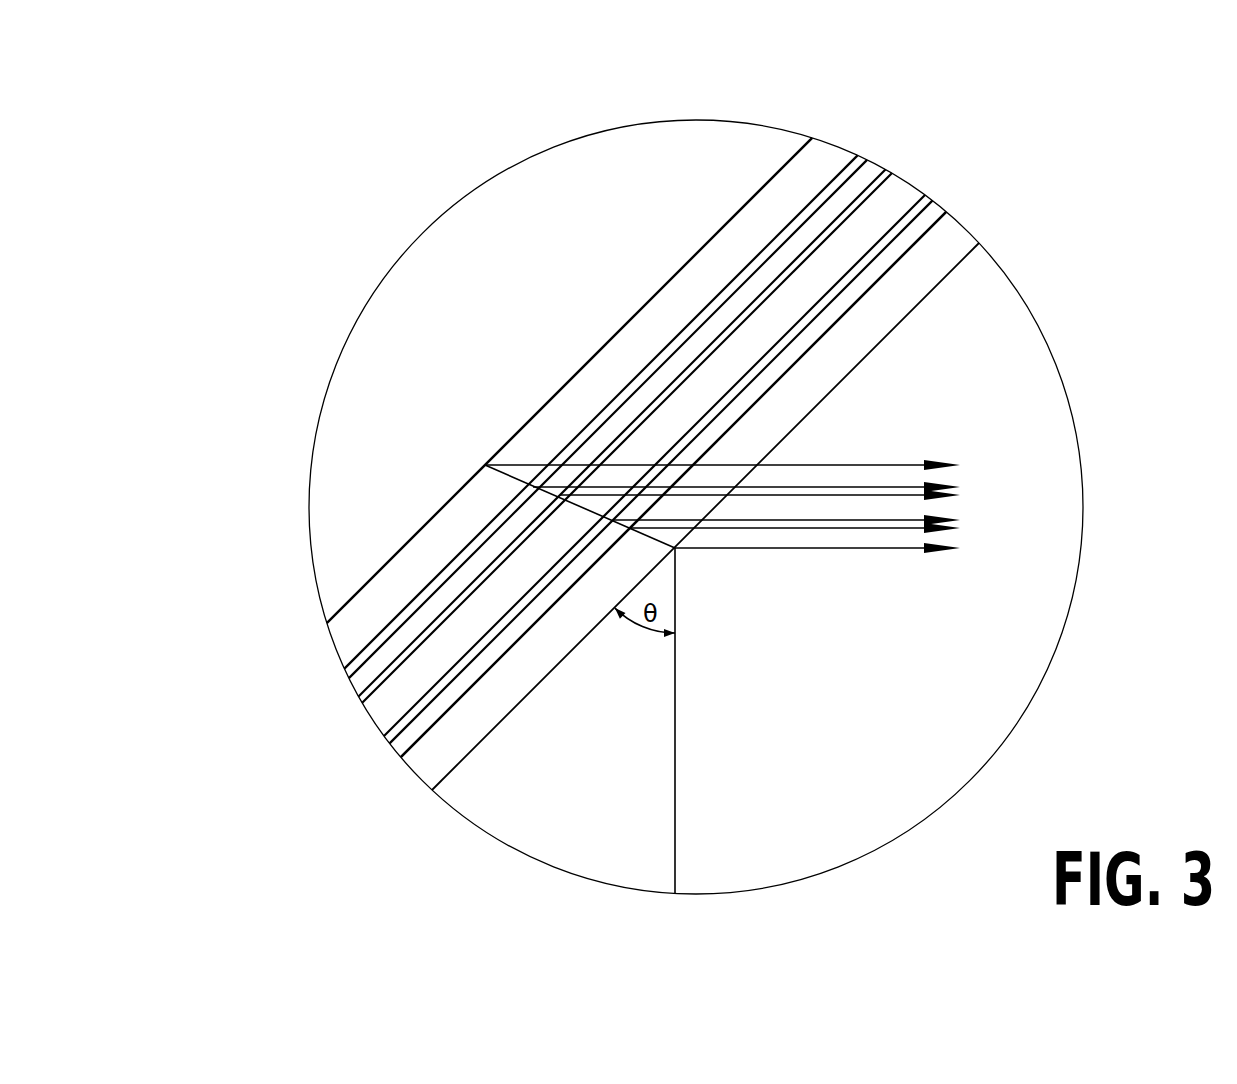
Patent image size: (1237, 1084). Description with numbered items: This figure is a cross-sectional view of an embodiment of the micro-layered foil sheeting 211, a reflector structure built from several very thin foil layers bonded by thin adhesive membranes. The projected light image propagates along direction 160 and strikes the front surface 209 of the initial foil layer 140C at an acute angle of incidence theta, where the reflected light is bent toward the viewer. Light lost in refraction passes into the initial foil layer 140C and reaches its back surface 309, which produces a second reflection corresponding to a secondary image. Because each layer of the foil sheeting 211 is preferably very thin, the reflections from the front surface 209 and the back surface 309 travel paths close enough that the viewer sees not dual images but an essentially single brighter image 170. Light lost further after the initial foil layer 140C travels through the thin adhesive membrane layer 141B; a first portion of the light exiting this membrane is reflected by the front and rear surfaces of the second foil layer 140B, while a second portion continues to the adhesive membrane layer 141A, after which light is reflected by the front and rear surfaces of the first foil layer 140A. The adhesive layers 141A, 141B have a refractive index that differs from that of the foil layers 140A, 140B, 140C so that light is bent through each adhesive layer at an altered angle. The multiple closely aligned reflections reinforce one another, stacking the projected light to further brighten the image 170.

The micro-layered foil sheeting 211 is at (1024, 134).
The first foil layer 140A is at (342, 628).
The adhesive membrane layer 141A is at (362, 675).
The second foil layer 140B is at (377, 710).
The adhesive membrane layer 141B is at (397, 747).
The initial foil layer 140C is at (428, 775).
The front surface 209 is at (505, 732).
The back surface 309 is at (438, 742).
The direction of propagation 160 is at (675, 660).
The single brighter image 170 is at (993, 450).